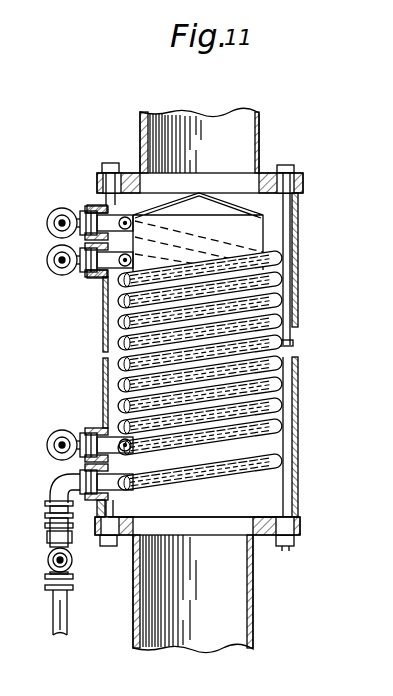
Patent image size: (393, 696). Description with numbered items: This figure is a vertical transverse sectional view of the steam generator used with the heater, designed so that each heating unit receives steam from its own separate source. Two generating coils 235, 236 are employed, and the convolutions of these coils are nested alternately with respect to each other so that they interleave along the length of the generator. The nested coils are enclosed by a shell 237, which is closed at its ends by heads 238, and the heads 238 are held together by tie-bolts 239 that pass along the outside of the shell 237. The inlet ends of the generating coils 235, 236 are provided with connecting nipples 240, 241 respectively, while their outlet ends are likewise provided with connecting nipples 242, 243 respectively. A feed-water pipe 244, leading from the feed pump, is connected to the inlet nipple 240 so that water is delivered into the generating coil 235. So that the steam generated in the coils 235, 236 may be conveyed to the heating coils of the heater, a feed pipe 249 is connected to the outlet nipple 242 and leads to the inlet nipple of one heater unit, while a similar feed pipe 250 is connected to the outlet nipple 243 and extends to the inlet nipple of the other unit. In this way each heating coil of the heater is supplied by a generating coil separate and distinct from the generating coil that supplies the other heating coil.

The generating coil 235 is at (238, 462).
The generating coil 236 is at (192, 440).
The shell 237 is at (298, 288).
The heads 238 is at (268, 175).
The tie-bolts 239 is at (107, 163).
The connecting nipple 240 is at (112, 503).
The connecting nipple 241 is at (102, 426).
The connecting nipple 242 is at (103, 285).
The connecting nipple 243 is at (100, 208).
The feed-water pipe 244 is at (62, 615).
The feed pipe 249 is at (50, 264).
The feed pipe 250 is at (50, 215).